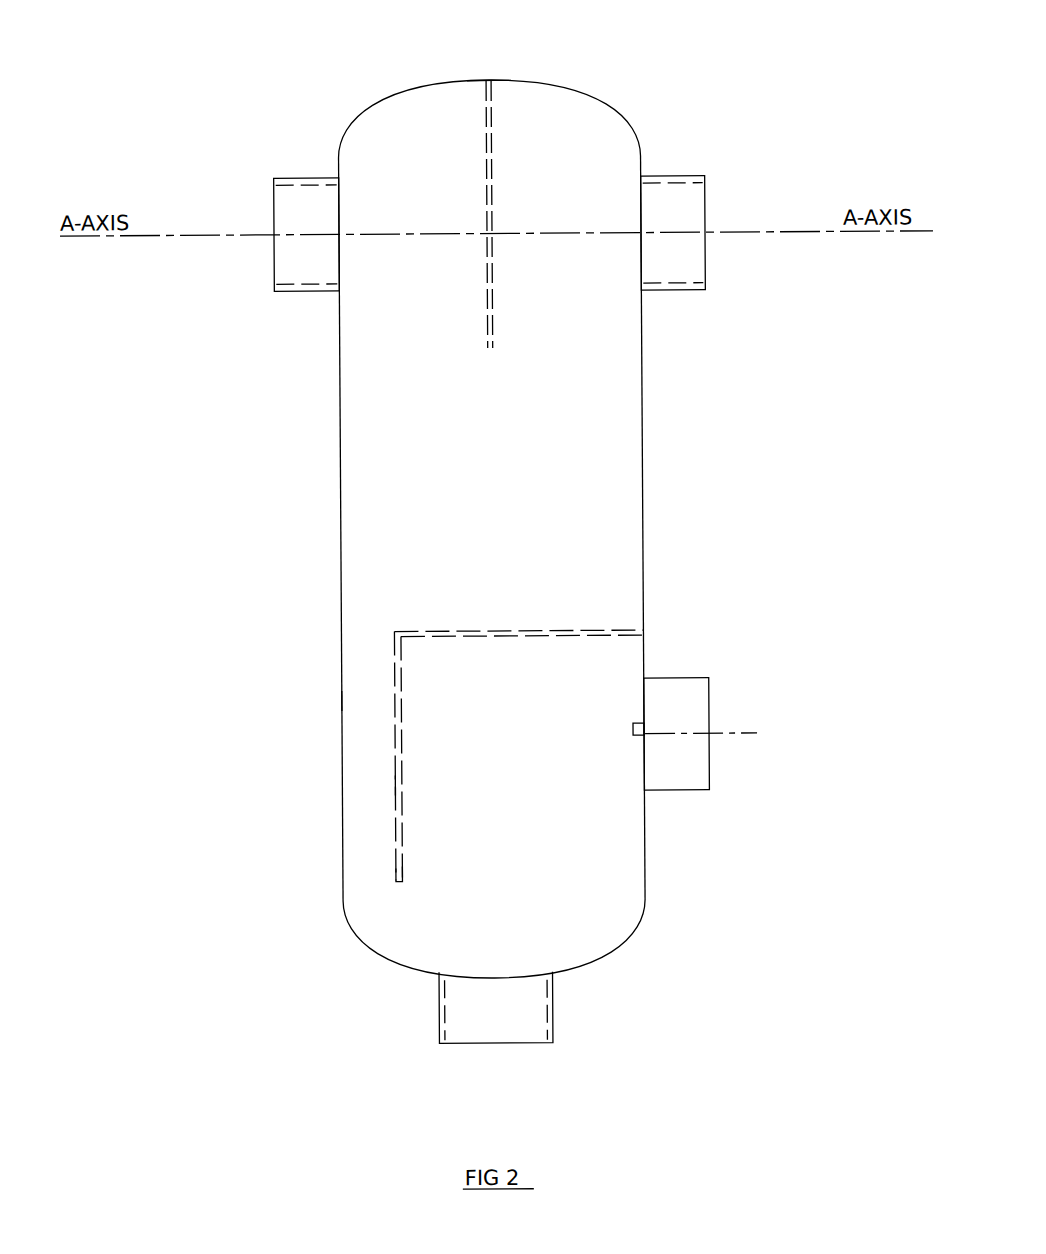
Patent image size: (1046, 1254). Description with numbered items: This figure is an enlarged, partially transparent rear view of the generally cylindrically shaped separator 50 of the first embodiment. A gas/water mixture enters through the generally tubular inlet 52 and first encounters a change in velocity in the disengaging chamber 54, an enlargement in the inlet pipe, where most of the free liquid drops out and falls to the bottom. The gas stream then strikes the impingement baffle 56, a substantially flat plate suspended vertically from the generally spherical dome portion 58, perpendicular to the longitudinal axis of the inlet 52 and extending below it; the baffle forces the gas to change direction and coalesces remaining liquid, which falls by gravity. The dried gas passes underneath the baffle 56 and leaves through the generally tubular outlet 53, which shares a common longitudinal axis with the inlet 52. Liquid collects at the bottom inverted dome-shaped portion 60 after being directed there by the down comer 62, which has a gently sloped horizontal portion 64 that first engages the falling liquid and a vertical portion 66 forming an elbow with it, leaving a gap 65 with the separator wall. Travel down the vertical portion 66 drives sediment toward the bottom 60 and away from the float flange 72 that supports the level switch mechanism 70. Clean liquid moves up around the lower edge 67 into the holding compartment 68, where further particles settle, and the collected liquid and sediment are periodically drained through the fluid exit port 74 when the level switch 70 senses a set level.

The separator 50 is at (655, 507).
The inlet 52 is at (276, 221).
The outlet 53 is at (707, 227).
The disengaging chamber 54 is at (586, 139).
The impingement baffle 56 is at (489, 178).
The dome portion 58 is at (520, 80).
The bottom inverted dome-shaped portion 60 is at (346, 929).
The down comer 62 is at (394, 718).
The horizontal portion 64 is at (548, 628).
The gap 65 is at (374, 699).
The vertical portion 66 is at (394, 784).
The lower edge 67 is at (393, 877).
The holding compartment 68 is at (516, 805).
The level switch mechanism 70 is at (646, 736).
The float flange 72 is at (707, 728).
The fluid exit port 74 is at (514, 1047).